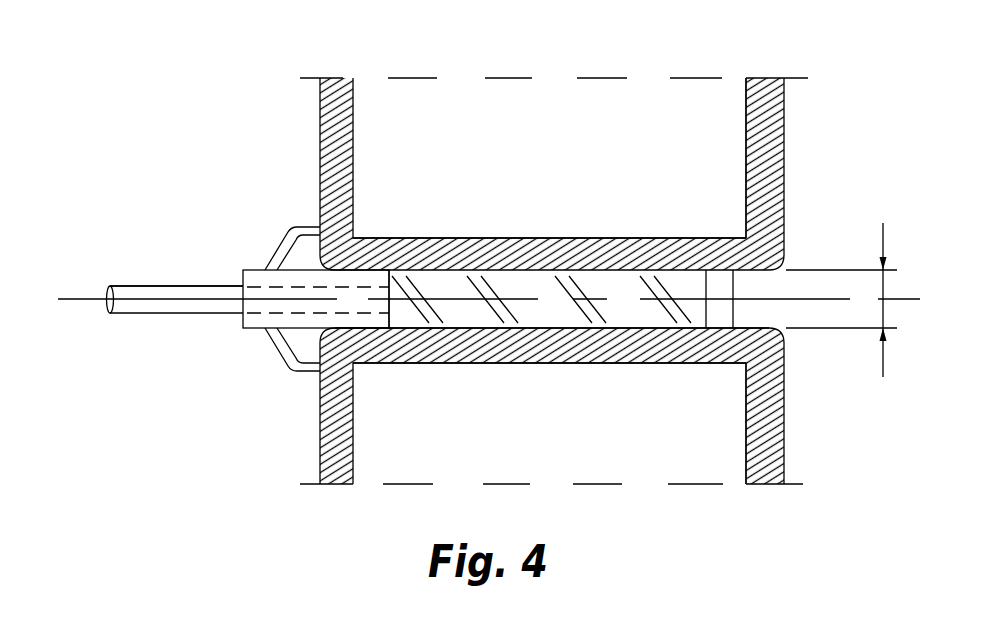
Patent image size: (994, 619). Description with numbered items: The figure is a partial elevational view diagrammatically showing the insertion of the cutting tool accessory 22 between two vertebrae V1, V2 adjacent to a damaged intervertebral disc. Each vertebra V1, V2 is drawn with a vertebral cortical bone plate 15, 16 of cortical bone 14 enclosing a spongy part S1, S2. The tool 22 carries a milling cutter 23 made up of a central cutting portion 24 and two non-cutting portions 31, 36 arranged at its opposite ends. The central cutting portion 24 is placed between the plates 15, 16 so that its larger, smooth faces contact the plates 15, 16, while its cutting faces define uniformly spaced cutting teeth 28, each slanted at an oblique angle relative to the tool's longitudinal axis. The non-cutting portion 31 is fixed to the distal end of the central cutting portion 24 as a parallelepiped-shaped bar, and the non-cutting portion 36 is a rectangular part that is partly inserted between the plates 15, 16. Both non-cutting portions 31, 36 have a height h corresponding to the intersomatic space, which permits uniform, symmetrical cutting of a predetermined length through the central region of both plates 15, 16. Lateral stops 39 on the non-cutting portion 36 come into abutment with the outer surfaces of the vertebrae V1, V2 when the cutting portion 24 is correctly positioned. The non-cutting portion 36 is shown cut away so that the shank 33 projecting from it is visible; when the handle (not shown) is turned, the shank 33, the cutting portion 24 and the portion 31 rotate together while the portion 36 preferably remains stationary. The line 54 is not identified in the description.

The cortical bone 14 is at (624, 268).
The vertebral cortical bone plate 15 is at (723, 236).
The vertebral cortical bone plate 16 is at (720, 365).
The cutting tool accessory 22 is at (160, 322).
The milling cutter 23 is at (414, 352).
The central cutting portion 24 is at (457, 103).
The cutting teeth 28 is at (490, 283).
The non-cutting portion 31 is at (725, 283).
The shank 33 is at (178, 282).
The non-cutting portion 36 is at (250, 331).
The lateral stops 39 is at (278, 378).
The axis 54 is at (86, 300).
The spongy part S1 is at (548, 87).
The spongy part S2 is at (482, 450).
The vertebra V1 is at (783, 152).
The vertebra V2 is at (783, 403).
The height h is at (841, 300).